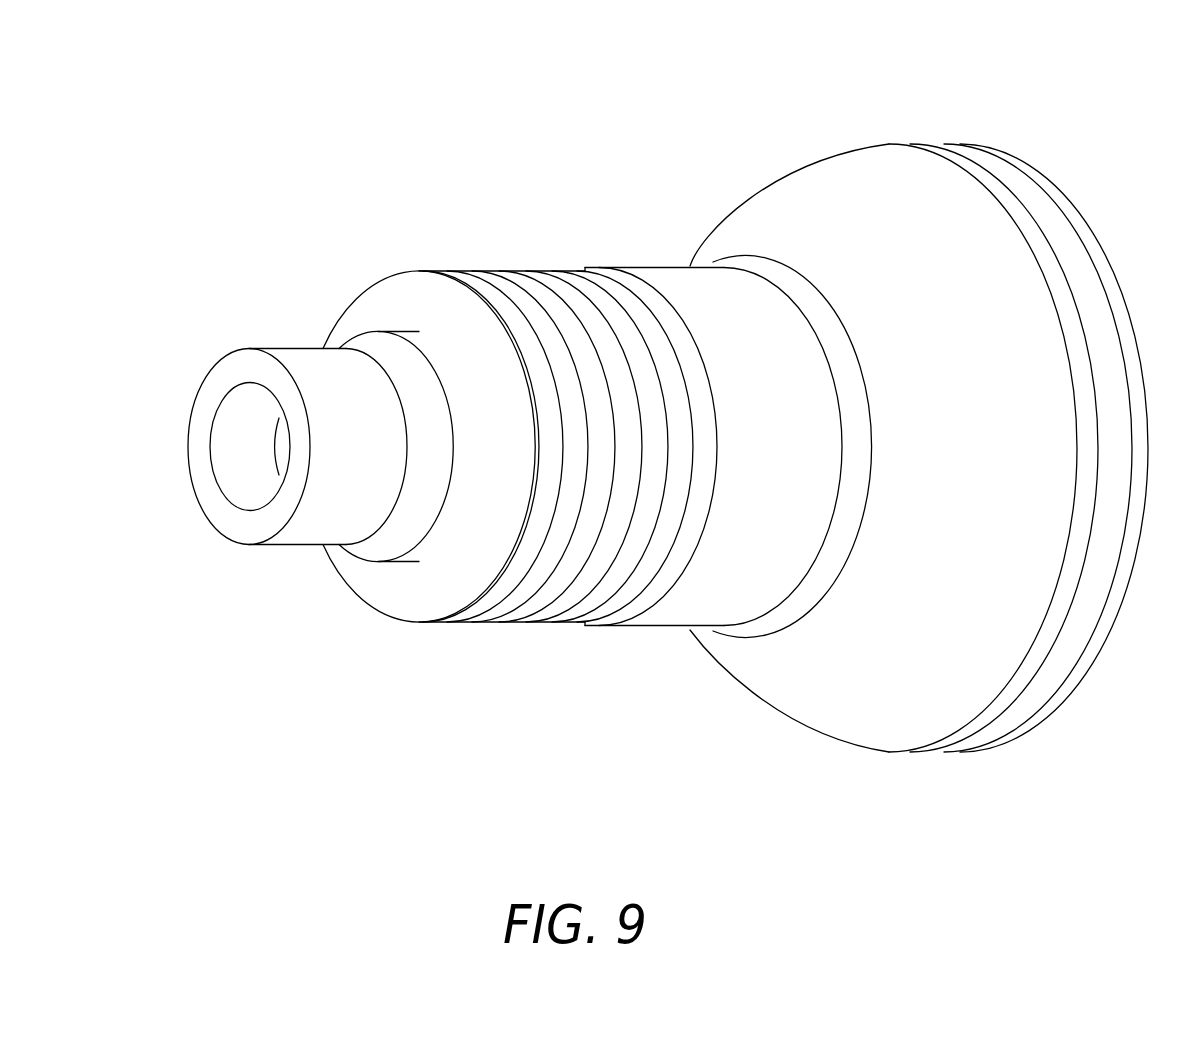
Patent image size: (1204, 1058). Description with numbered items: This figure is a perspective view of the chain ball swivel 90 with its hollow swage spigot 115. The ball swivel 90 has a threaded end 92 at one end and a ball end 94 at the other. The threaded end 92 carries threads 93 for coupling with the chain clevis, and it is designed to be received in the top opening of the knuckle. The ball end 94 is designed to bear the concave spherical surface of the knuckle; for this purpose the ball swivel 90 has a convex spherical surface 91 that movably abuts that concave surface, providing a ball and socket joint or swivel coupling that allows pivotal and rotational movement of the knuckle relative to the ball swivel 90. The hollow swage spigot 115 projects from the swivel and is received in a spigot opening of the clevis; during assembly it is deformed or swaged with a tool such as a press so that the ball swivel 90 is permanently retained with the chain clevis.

The ball swivel 90 is at (668, 454).
The convex spherical surface 91 is at (867, 230).
The threaded end 92 is at (523, 648).
The threads 93 is at (570, 347).
The ball end 94 is at (822, 775).
The hollow swage spigot 115 is at (308, 365).